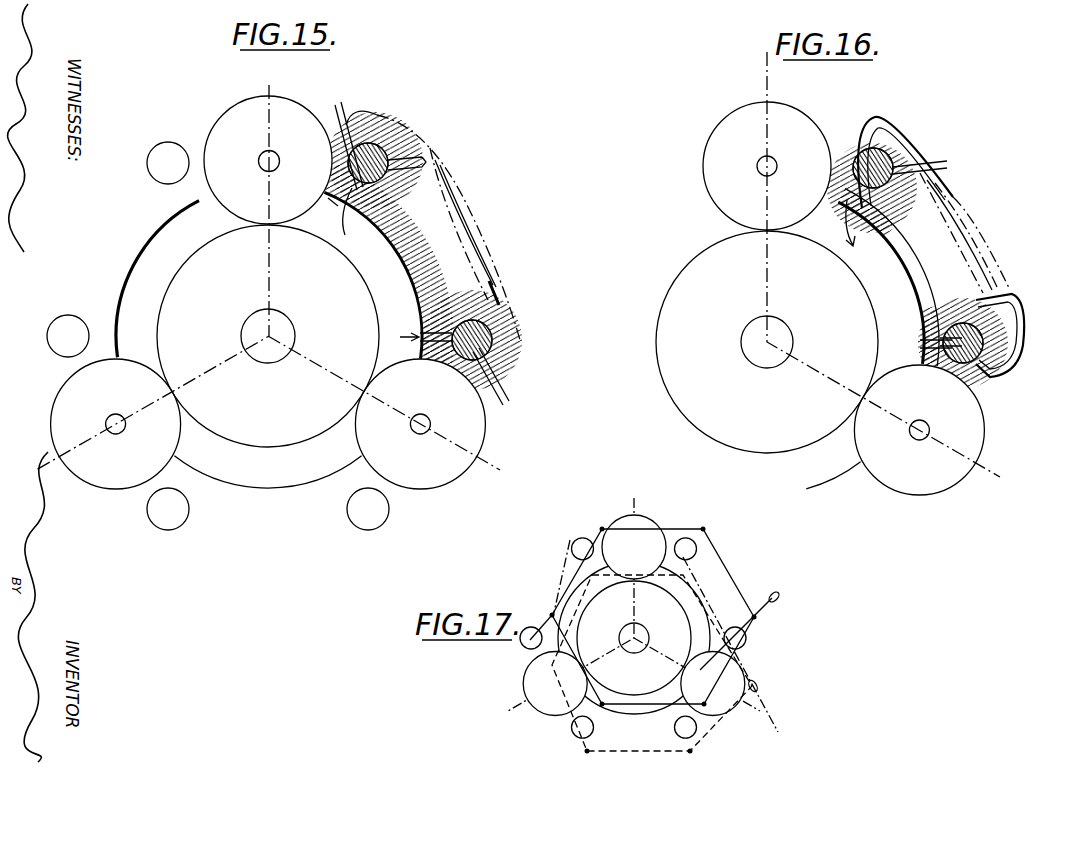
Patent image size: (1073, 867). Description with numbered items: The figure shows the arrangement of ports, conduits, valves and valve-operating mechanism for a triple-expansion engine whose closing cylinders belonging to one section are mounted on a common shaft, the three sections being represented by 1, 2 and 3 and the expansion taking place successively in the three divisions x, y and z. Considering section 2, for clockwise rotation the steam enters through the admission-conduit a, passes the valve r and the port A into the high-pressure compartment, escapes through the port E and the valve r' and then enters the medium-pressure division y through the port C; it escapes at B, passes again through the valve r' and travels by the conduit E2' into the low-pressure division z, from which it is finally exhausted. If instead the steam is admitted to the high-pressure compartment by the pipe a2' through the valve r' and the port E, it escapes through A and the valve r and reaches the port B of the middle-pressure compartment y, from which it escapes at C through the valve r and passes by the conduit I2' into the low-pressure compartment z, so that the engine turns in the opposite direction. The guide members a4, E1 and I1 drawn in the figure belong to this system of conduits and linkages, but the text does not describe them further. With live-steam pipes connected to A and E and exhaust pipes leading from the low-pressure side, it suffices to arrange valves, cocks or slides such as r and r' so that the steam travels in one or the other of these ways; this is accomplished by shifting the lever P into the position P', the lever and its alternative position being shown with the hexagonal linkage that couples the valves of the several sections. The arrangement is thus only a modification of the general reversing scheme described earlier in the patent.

In FIG. 15, the section 1 is at (268, 356).
In FIG. 16, the section 1 is at (767, 360).
In FIG. 15, the section 2 is at (423, 251).
In FIG. 16, the section 2 is at (917, 265).
In FIG. 15, the section 3 is at (157, 279).
In FIG. 16, the section 3 is at (677, 279).
In FIG. 15, the valve r is at (368, 155).
In FIG. 16, the valve r is at (880, 181).
In FIG. 15, the valve r' is at (497, 340).
In FIG. 16, the valve r' is at (993, 343).
In FIG. 15, the connecting rod a4 is at (422, 210).
In FIG. 15, the pipe a2' is at (484, 293).
In FIG. 15, the admission-conduit a is at (407, 169).
In FIG. 15, the division x is at (327, 210).
In FIG. 15, the low-pressure division z is at (268, 277).
In FIG. 16, the medium-pressure division y is at (856, 264).
In FIG. 15, the port A is at (350, 213).
In FIG. 16, the port B is at (920, 344).
In FIG. 16, the port C is at (838, 223).
In FIG. 15, the port E is at (421, 344).
In FIG. 16, the bar E1 is at (958, 160).
In FIG. 16, the conduit E2' is at (959, 315).
In FIG. 16, the bracket I1 is at (934, 205).
In FIG. 16, the conduit I2' is at (982, 289).
In FIG. 17, the lever P is at (748, 621).
In FIG. 17, the position P' is at (734, 644).